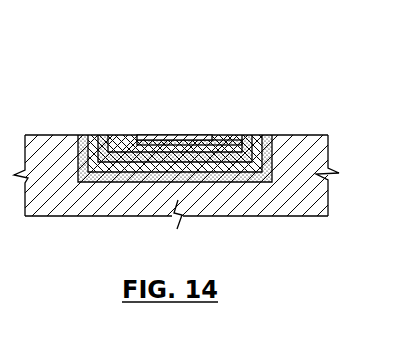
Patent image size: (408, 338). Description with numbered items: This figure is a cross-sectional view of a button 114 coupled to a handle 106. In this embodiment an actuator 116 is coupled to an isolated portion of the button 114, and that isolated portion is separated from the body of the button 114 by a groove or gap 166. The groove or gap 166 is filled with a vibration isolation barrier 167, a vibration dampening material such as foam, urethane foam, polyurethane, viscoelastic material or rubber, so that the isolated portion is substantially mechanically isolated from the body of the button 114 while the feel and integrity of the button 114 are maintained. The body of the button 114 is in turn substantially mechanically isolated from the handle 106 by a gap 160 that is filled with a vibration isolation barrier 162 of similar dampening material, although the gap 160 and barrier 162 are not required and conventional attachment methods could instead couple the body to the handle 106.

The handle 106 is at (296, 198).
The button 114 is at (259, 128).
The actuator 116 is at (173, 128).
The gap 160 is at (82, 127).
The vibration isolation barrier 162 is at (271, 136).
The groove or gap 166 is at (108, 127).
The vibration isolation barrier 167 is at (244, 136).